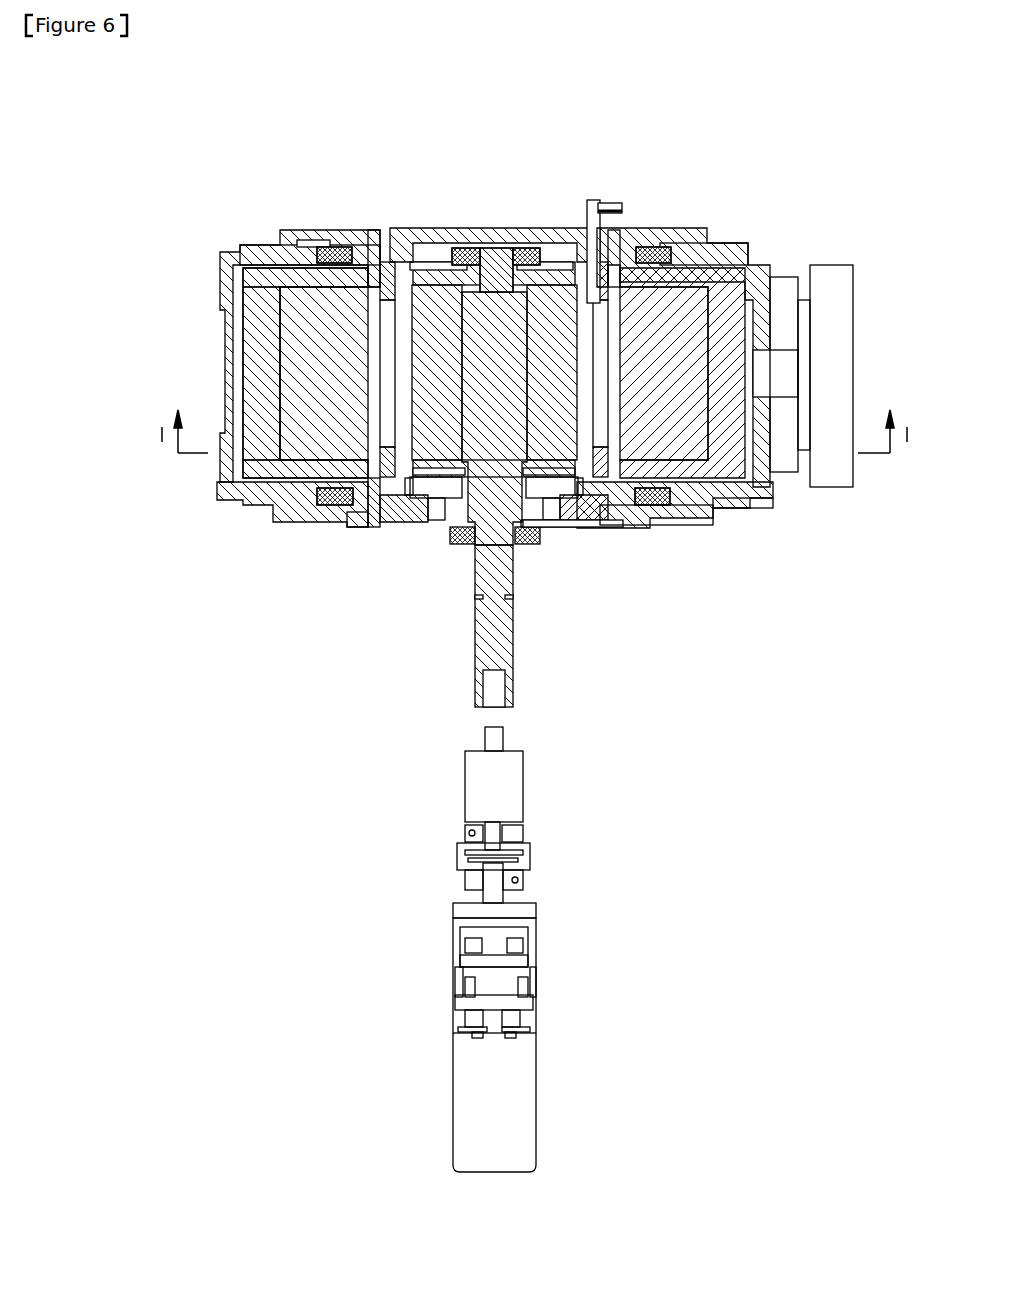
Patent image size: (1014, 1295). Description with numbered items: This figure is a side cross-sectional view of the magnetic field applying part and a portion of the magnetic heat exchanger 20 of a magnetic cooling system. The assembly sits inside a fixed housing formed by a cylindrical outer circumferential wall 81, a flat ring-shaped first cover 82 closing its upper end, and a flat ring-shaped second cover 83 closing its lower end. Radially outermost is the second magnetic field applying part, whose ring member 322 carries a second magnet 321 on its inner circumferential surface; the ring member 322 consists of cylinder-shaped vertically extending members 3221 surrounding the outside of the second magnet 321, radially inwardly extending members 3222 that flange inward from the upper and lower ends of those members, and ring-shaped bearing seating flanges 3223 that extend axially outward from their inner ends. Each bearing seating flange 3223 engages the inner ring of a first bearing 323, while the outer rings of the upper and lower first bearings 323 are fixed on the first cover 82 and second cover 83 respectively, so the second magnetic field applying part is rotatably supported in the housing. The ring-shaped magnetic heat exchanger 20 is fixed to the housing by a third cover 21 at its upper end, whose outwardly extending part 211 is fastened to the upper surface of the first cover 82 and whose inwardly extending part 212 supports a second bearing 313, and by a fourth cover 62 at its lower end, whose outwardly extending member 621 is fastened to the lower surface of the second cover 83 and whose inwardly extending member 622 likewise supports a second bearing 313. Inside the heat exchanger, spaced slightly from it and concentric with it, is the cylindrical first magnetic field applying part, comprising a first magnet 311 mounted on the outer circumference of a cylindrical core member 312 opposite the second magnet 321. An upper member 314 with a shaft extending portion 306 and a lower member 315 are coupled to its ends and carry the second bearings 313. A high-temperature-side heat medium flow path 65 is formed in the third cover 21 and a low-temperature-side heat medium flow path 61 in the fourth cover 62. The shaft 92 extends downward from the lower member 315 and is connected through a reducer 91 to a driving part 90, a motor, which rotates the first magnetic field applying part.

The magnetic heat exchanger 20 is at (670, 523).
The third cover 21 is at (652, 238).
The outwardly extending part 211 is at (685, 245).
The inwardly extending part 212 is at (565, 240).
The shaft extending portion 306 is at (496, 250).
The first magnet 311 is at (423, 453).
The core member 312 is at (457, 470).
The second bearing 313 is at (528, 252).
The upper member 314 is at (438, 263).
The lower member 315 is at (430, 467).
The second magnet 321 is at (318, 360).
The ring member 322 is at (263, 328).
The vertically extending member 3221 is at (262, 387).
The radially inwardly extending member 3222 is at (297, 278).
The first bearing 323 is at (335, 262).
The bearing seating flange 3223 is at (373, 252).
The low-temperature-side heat medium flow path 61 is at (613, 507).
The fourth cover 62 is at (648, 518).
The outwardly extending member 621 is at (690, 528).
The inwardly extending member 622 is at (577, 510).
The high-temperature-side heat medium flow path 65 is at (620, 206).
The outer circumferential wall 81 is at (228, 282).
The first cover 82 is at (250, 243).
The second cover 83 is at (243, 505).
The driving part 90 is at (518, 1094).
The reducer 91 is at (520, 786).
The shaft 92 is at (507, 648).